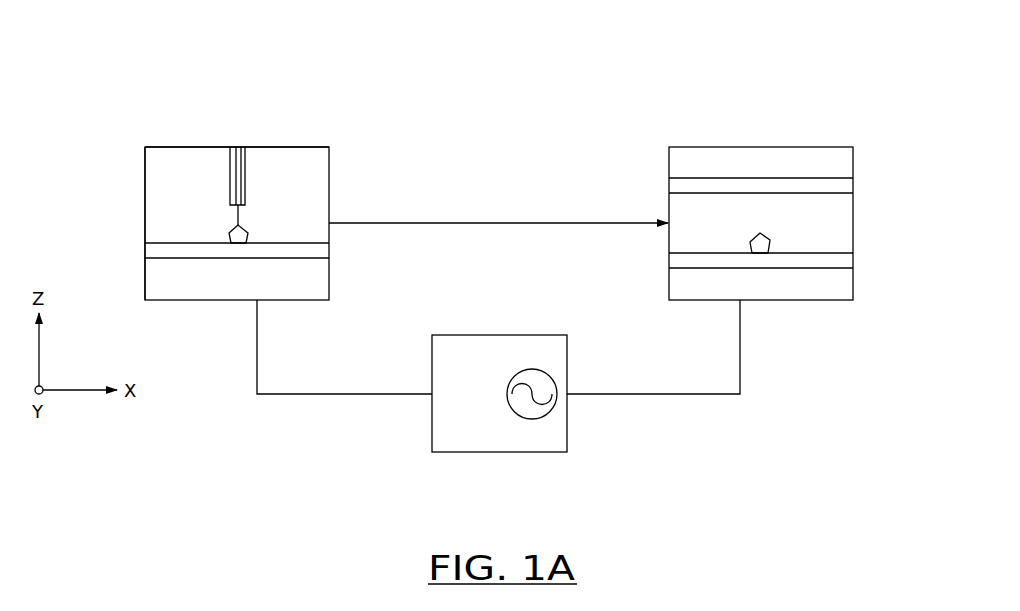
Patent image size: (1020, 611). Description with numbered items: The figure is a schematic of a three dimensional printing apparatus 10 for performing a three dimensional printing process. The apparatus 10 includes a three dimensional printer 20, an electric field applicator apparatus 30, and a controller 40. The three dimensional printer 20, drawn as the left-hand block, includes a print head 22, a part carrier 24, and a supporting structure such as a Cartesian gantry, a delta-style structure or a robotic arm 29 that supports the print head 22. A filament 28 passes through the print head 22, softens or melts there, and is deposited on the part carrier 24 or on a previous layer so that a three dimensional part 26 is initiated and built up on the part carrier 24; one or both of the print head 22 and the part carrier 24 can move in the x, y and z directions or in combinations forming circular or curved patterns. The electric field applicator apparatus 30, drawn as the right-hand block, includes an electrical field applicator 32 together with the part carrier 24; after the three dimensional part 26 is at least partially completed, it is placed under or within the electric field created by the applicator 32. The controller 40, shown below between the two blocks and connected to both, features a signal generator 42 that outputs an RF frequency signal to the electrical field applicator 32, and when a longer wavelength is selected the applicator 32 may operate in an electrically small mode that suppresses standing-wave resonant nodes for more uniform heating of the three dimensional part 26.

The three dimensional printing apparatus 10 is at (632, 54).
The three dimensional printer 20 is at (317, 147).
The print head 22 is at (230, 170).
The part carrier 24 is at (200, 258).
The three dimensional part 26 is at (248, 232).
The filament 28 is at (245, 170).
The robotic arm 29 is at (157, 147).
The electric field applicator apparatus 30 is at (776, 147).
The electrical field applicator 32 is at (828, 193).
The controller 40 is at (465, 452).
The signal generator 42 is at (530, 370).